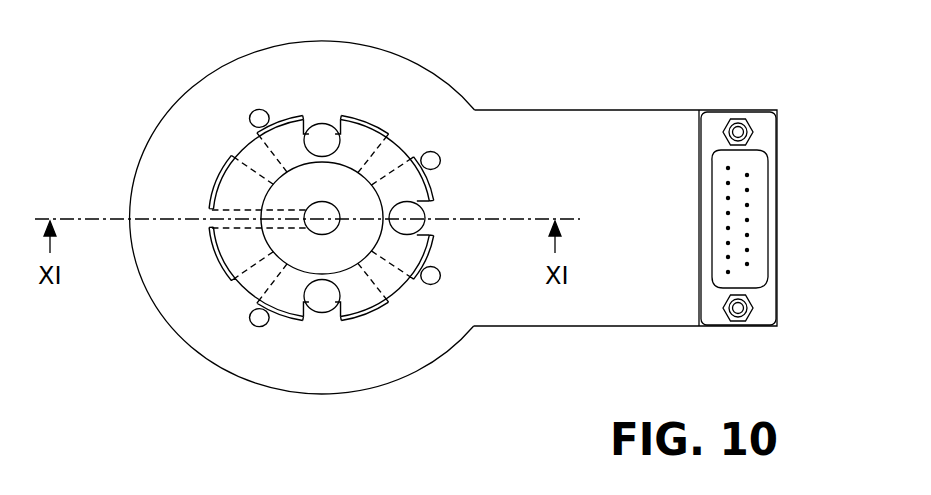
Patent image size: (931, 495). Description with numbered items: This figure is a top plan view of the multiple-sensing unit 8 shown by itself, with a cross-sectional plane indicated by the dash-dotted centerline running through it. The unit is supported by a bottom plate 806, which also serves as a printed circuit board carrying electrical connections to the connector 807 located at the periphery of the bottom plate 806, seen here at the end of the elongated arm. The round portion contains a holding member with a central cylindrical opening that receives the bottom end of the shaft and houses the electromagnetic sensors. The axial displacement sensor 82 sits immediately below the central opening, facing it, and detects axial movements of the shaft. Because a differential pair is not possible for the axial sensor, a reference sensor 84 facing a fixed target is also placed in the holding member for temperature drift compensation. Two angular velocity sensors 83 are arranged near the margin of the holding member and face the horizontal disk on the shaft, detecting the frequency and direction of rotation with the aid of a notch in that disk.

The multiple-sensing unit 8 is at (517, 73).
The axial displacement sensor 82 is at (307, 215).
The angular velocity sensor 83 is at (321, 138).
The reference sensor 84 is at (320, 297).
The bottom plate 806 is at (503, 297).
The connector 807 is at (709, 308).